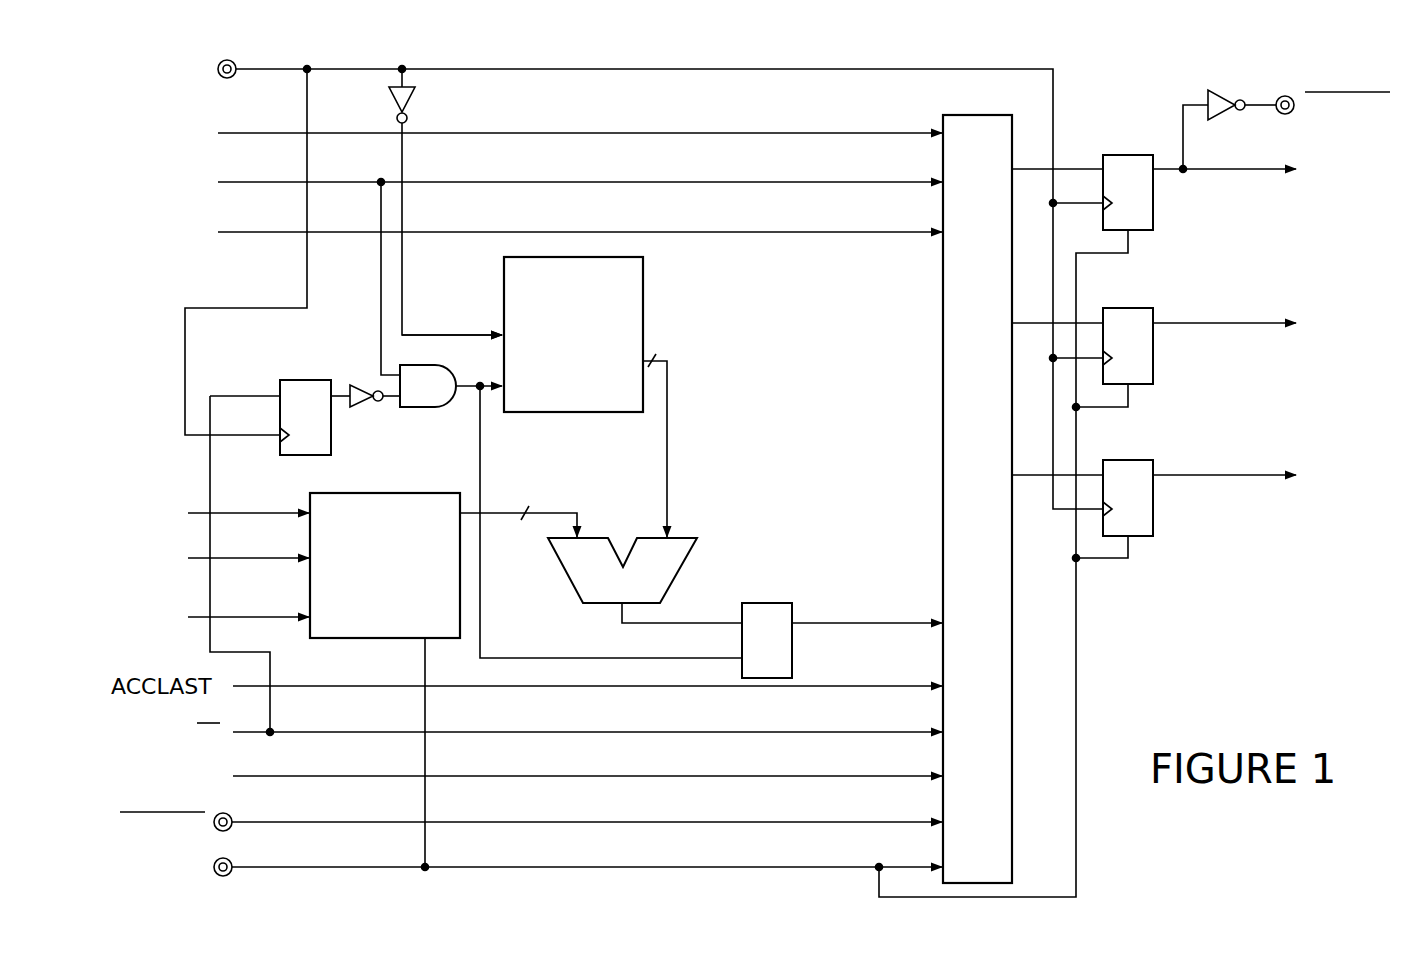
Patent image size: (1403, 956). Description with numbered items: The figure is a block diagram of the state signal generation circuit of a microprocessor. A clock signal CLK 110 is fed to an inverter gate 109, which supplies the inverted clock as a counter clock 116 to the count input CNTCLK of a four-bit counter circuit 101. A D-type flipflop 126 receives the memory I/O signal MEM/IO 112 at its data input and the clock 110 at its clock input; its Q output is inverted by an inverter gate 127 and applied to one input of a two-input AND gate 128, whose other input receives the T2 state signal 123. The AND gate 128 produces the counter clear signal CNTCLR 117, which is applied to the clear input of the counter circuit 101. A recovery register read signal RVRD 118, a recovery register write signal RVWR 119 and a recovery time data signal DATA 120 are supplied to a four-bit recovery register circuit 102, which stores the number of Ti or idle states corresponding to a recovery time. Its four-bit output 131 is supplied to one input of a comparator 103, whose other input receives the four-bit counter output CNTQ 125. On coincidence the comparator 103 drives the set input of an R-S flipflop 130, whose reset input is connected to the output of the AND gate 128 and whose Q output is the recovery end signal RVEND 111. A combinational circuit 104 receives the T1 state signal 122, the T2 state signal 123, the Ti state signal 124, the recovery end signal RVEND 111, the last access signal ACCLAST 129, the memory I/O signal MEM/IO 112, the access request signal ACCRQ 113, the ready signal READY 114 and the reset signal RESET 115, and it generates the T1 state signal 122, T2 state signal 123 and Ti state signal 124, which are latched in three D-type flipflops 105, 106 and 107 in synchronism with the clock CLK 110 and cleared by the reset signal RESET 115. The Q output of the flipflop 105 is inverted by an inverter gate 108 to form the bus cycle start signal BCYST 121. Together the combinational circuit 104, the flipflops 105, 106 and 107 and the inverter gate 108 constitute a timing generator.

The counter circuit 101 is at (643, 302).
The recovery register circuit 102 is at (416, 480).
The comparator 103 is at (682, 537).
The combinational circuit 104 is at (990, 100).
The D-type flipflop 105 is at (1143, 140).
The D-type flipflop 106 is at (1143, 293).
The D-type flipflop 107 is at (1143, 445).
The inverter gate 108 is at (1218, 90).
The inverter gate 109 is at (412, 104).
The clock signal CLK 110 is at (330, 70).
The recovery end signal RVEND 111 is at (838, 622).
The memory I/O signal MEM/IO 112 is at (393, 731).
The access request signal ACCRQ 113 is at (316, 775).
The ready signal READY 114 is at (316, 821).
The reset signal RESET 115 is at (316, 866).
The counter clock 116 is at (445, 320).
The counter clear signal CNTCLR 117 is at (480, 476).
The recovery register read signal RVRD 118 is at (268, 511).
The recovery register write signal RVWR 119 is at (268, 556).
The recovery time data signal DATA 120 is at (268, 615).
The bus cycle start signal BCYST 121 is at (1256, 104).
The T1 state signal 122 is at (276, 131).
The T2 state signal 123 is at (276, 180).
The Ti state signal 124 is at (276, 230).
The counter output CNTQ 125 is at (667, 436).
The D-type flipflop 126 is at (316, 378).
The inverter gate 127 is at (360, 408).
The 2-input AND gate 128 is at (425, 410).
The last access signal ACCLAST 129 is at (393, 686).
The R-S flipflop 130 is at (766, 602).
The four-bit recovery data 131 is at (497, 516).